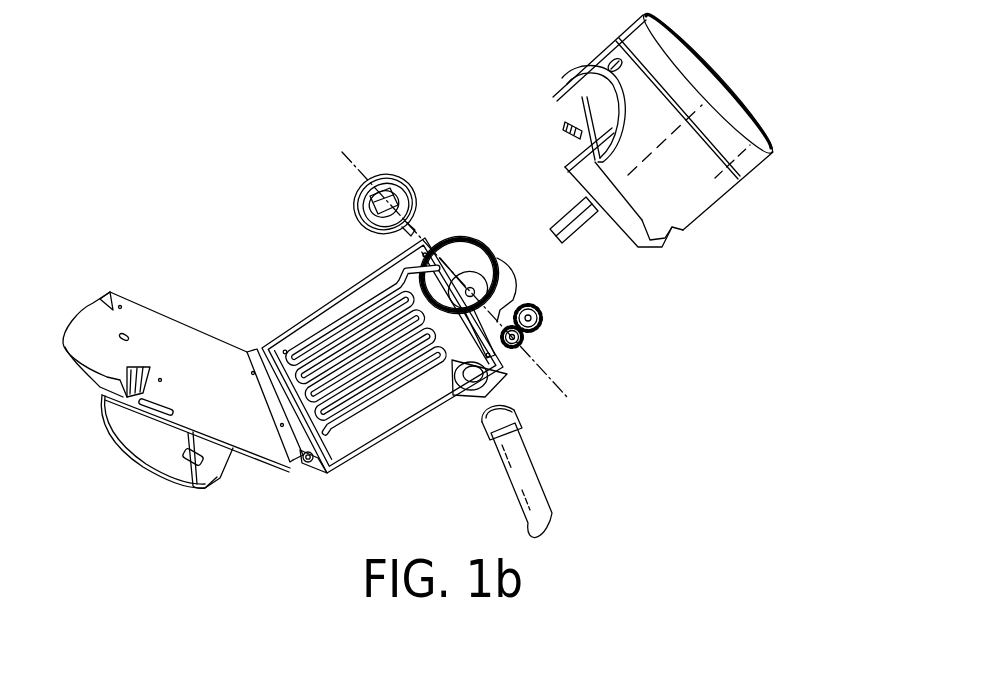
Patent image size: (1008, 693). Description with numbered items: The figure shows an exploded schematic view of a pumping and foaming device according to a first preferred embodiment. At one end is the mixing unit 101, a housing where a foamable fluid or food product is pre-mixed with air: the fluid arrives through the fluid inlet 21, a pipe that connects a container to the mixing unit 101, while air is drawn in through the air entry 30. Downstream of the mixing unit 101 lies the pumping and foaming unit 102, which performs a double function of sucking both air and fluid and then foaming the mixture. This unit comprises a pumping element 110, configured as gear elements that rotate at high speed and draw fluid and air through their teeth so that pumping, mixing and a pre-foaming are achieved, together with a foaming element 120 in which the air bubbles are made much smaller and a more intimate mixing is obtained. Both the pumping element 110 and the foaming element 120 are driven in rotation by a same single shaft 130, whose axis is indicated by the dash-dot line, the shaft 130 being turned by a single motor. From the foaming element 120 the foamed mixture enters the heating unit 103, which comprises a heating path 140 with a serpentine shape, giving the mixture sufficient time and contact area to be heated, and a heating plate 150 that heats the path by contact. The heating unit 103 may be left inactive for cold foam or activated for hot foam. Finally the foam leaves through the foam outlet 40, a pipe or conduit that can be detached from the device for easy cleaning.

The mixing unit 101 is at (773, 108).
The air entry 30 is at (612, 61).
The fluid inlet 21 is at (570, 217).
The pumping and foaming unit 102 is at (403, 161).
The shaft 130 is at (342, 152).
The foaming element 120 is at (360, 227).
The heating path 140 is at (310, 343).
The pumping element 110 is at (543, 320).
The heating plate 150 is at (197, 343).
The heating unit 103 is at (305, 464).
The foam outlet 40 is at (537, 473).